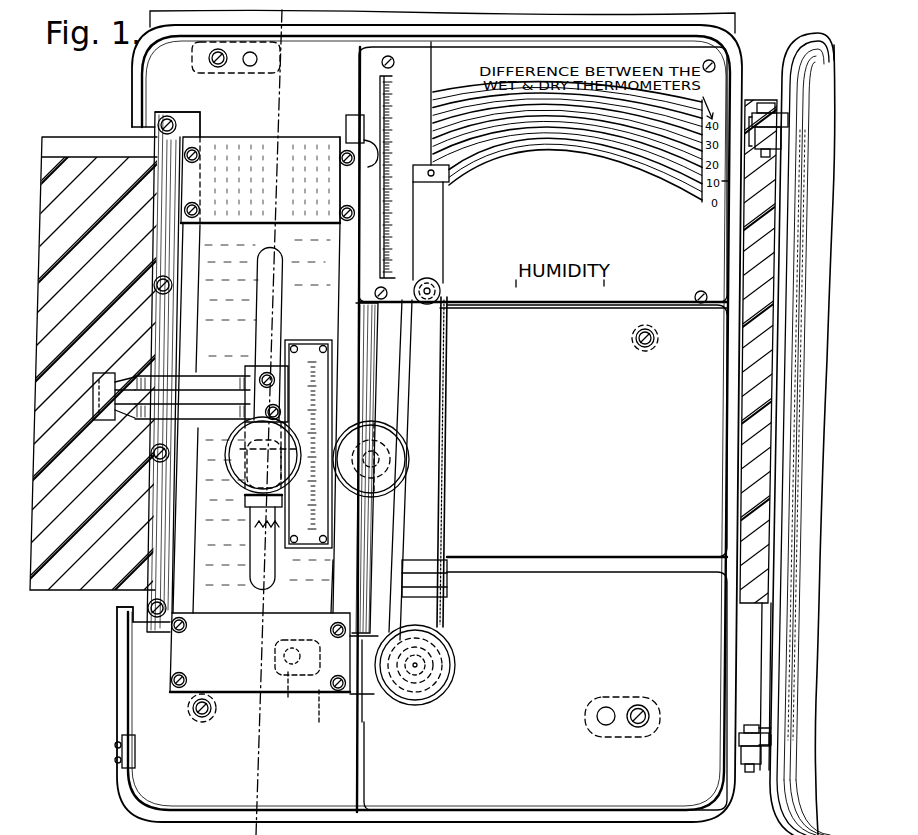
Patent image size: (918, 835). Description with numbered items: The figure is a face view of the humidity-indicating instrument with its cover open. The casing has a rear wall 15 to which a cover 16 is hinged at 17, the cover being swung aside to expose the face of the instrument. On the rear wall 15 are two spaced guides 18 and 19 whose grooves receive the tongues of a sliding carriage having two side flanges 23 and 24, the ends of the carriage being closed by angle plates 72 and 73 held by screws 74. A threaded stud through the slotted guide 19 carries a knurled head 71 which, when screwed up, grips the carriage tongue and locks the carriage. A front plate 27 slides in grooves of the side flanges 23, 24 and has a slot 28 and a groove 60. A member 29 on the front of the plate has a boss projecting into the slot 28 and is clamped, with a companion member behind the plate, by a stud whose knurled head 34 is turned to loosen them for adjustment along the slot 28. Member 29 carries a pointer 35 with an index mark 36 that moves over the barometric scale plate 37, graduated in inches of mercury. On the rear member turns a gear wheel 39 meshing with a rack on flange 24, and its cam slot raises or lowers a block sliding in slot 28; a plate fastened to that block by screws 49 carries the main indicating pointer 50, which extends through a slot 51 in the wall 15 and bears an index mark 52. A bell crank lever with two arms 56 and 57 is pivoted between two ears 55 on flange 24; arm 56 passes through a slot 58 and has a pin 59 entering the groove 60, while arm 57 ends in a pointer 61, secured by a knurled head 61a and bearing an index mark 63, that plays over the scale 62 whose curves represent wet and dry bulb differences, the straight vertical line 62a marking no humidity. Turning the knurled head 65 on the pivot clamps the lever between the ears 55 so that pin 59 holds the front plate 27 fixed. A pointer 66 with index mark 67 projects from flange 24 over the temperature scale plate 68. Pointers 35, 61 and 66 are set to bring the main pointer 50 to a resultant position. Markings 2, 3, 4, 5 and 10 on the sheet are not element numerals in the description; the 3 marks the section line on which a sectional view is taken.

The wall 2 is at (66, 384).
The center line 3 is at (256, 832).
The wall section 4 is at (83, 560).
The center line 5 is at (283, 27).
The base 10 is at (150, 832).
The rear wall 15 is at (587, 431).
The cover 16 is at (799, 792).
The hinge 17 is at (764, 103).
The guide 18 is at (197, 118).
The guide 19 is at (345, 120).
The side flange 23 is at (262, 345).
The side flange 24 is at (336, 582).
The front plate 27 is at (245, 406).
The slot 28 is at (250, 573).
The member 29 is at (248, 503).
The knurled head 34 is at (233, 471).
The pointer 35 is at (270, 456).
The index mark 36 is at (264, 464).
The barometric scale plate 37 is at (313, 343).
The gear wheel 39 is at (262, 518).
The screws 49 is at (276, 410).
The pointer 50 is at (103, 834).
The slot 51 is at (137, 600).
The index mark 52 is at (100, 420).
The ears 55 is at (375, 695).
The arm 56 is at (325, 716).
The arm 57 is at (448, 455).
The slot 58 is at (397, 617).
The pin 59 is at (288, 703).
The groove 60 is at (291, 640).
The pointer 61 is at (440, 258).
The knurled head 61a is at (441, 291).
The scale 62 is at (572, 148).
The straight vertical line 62a is at (438, 110).
The index mark 63 is at (450, 180).
The knurled head 65 is at (453, 680).
The pointer 66 is at (355, 172).
The index mark 67 is at (366, 148).
The scale plate 68 is at (379, 101).
The knurled head 71 is at (405, 452).
The angle plate 72 is at (272, 150).
The angle plate 73 is at (260, 652).
The screws 74 is at (210, 152).